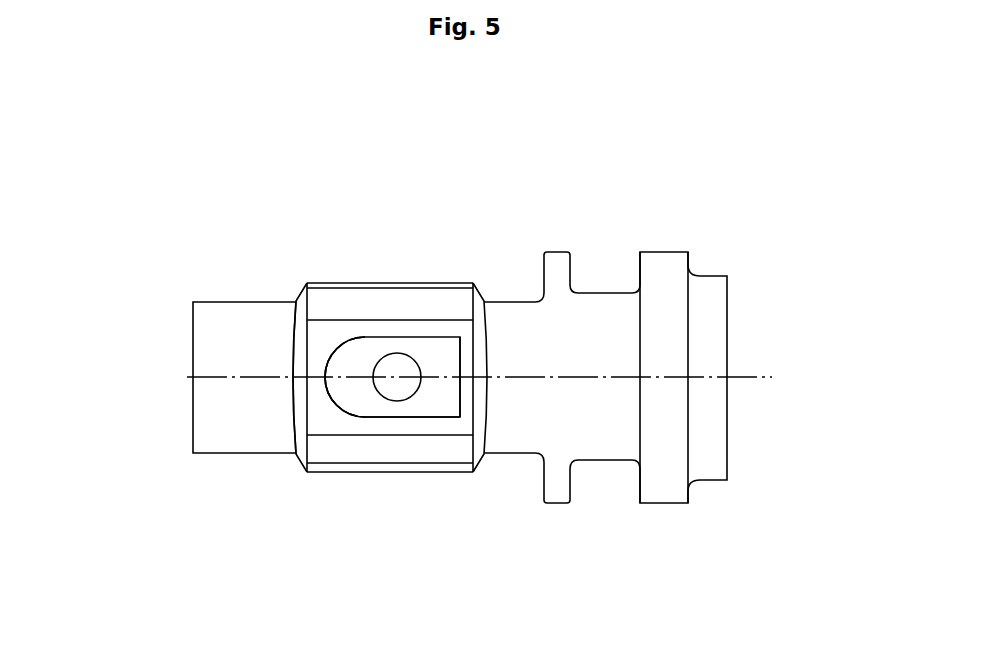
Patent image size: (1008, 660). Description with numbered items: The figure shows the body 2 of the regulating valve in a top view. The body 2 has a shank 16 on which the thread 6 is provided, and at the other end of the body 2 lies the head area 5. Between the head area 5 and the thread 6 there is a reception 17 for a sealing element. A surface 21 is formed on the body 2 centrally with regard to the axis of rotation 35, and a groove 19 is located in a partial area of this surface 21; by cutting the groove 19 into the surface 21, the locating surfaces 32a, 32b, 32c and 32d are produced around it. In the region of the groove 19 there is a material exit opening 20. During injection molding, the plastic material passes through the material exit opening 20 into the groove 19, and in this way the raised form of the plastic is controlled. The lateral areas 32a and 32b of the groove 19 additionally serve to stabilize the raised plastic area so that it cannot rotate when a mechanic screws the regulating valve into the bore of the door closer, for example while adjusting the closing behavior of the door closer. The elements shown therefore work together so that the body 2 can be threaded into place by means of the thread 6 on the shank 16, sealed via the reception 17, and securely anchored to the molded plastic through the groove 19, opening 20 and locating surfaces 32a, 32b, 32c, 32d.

The body 2 is at (250, 158).
The head area 5 is at (731, 325).
The thread 6 is at (393, 284).
The shank 16 is at (247, 301).
The reception for a sealing element 17 is at (622, 278).
The groove 19 is at (352, 385).
The material exit opening 20 is at (393, 390).
The surface 21 is at (318, 392).
The locating surface 32a is at (398, 418).
The locating surface 32b is at (418, 337).
The locating surface 32c is at (462, 385).
The locating surface 32d is at (338, 350).
The axis of rotation 35 is at (742, 377).